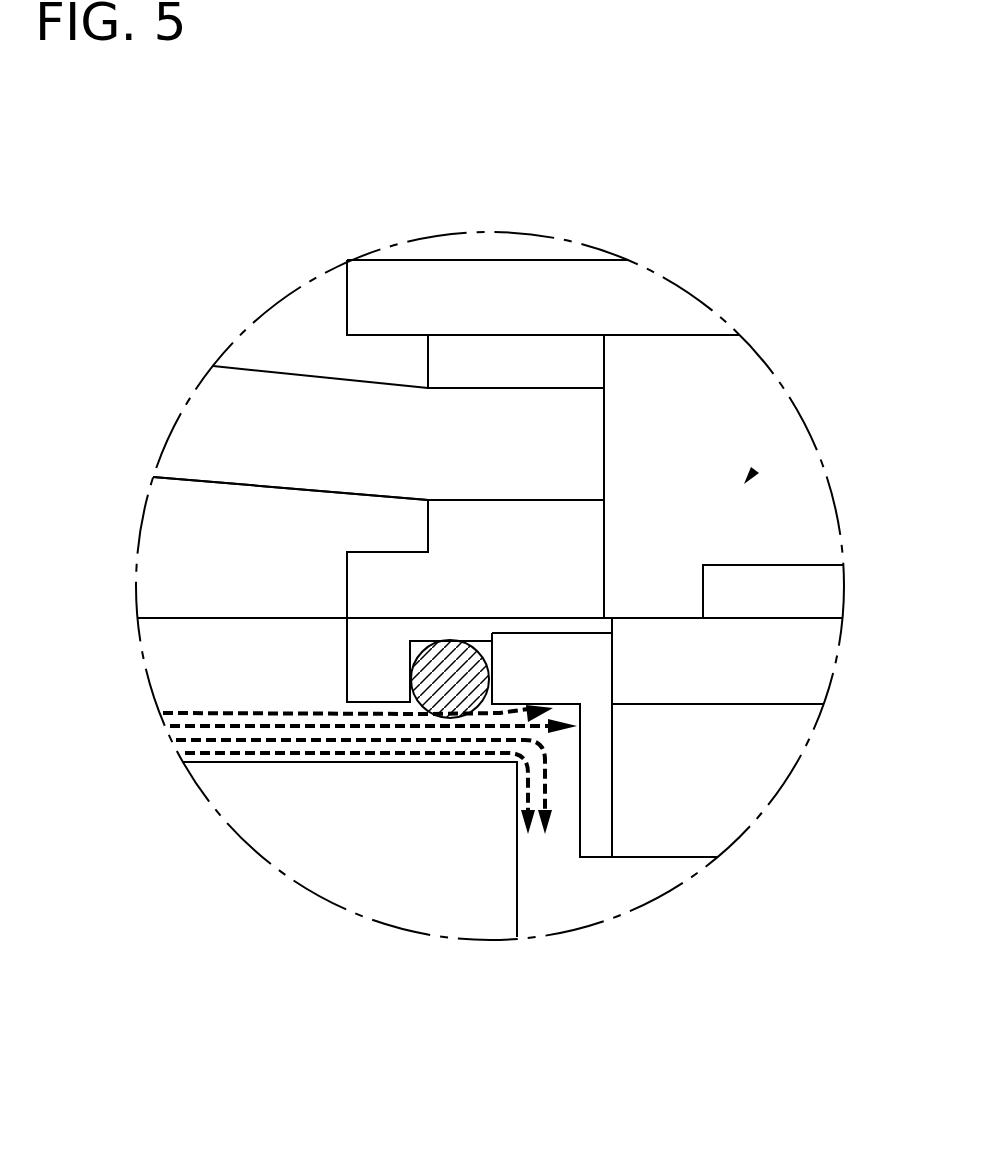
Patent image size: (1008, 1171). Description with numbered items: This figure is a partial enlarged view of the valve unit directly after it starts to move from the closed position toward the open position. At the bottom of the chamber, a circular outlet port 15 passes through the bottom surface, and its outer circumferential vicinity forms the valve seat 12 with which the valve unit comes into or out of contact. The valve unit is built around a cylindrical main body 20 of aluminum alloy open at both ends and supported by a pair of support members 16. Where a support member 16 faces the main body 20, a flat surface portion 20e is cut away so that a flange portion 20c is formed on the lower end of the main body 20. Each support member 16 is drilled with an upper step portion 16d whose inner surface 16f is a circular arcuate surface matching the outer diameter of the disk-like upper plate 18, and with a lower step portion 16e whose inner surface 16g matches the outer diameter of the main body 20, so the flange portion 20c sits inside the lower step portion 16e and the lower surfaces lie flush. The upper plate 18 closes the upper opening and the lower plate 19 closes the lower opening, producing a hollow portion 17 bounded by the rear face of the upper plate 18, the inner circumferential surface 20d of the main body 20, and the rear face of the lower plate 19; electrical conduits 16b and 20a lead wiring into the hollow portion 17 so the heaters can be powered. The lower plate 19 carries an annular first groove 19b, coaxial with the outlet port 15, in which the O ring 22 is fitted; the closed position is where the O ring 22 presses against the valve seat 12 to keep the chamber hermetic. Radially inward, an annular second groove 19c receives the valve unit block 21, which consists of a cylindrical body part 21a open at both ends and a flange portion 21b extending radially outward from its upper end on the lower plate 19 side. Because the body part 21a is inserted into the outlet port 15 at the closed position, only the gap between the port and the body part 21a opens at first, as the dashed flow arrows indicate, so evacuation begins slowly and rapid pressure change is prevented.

The valve seat 12 is at (205, 752).
The outlet port 15 is at (519, 900).
The support member 16 is at (287, 318).
The electrical conduit 16b is at (263, 485).
The upper step portion 16d is at (408, 335).
The lower step portion 16e is at (421, 566).
The inner surface of the upper step portion 16f is at (360, 298).
The inner surface of the lower step portion 16g is at (347, 548).
The hollow portion 17 is at (750, 478).
The upper plate 18 is at (545, 293).
The lower plate 19 is at (800, 658).
The first groove 19b is at (410, 658).
The second groove 19c is at (578, 634).
The main body 20 is at (470, 352).
The electrical conduit 20a is at (497, 500).
The flange portion 20c is at (347, 588).
The inner circumferential surface 20d is at (604, 360).
The flat surface portion 20e is at (428, 523).
The valve unit block 21 is at (758, 785).
The body part 21a is at (580, 857).
The flange portion 21b is at (560, 704).
The O ring 22 is at (412, 692).